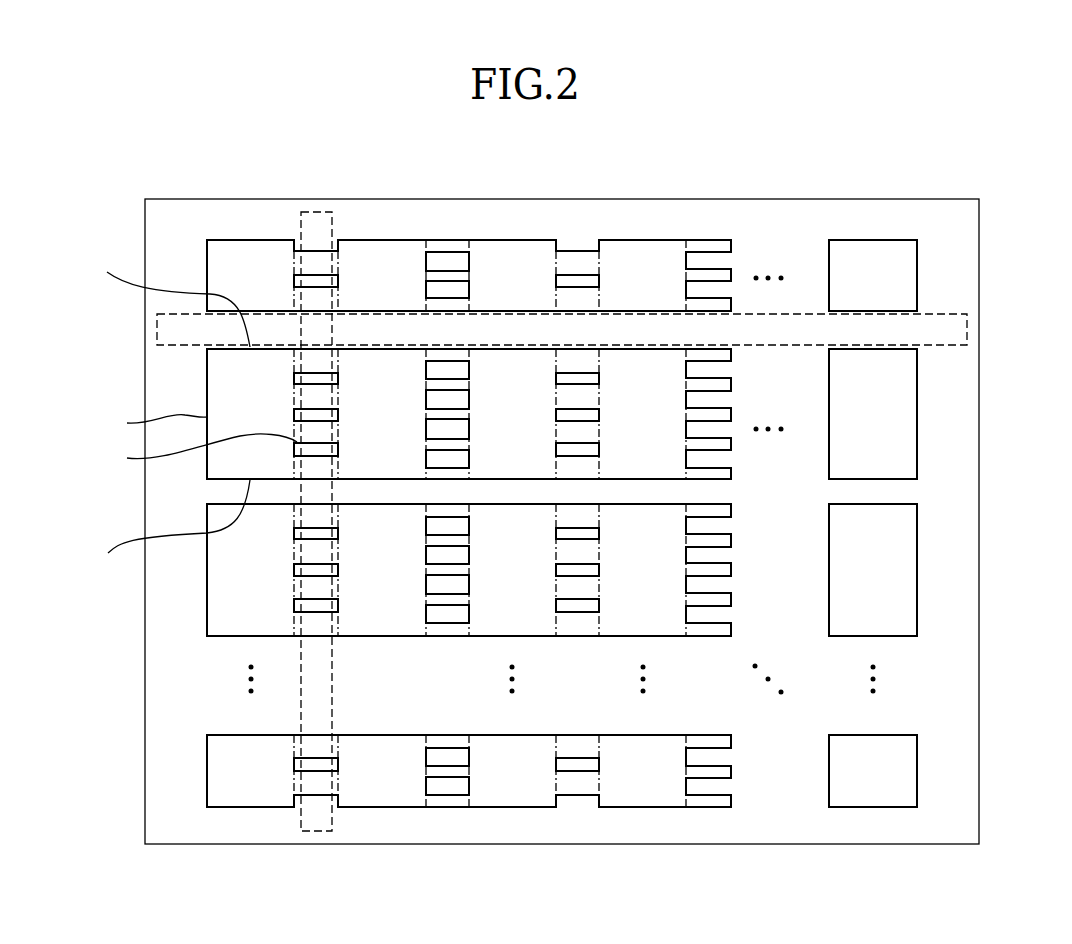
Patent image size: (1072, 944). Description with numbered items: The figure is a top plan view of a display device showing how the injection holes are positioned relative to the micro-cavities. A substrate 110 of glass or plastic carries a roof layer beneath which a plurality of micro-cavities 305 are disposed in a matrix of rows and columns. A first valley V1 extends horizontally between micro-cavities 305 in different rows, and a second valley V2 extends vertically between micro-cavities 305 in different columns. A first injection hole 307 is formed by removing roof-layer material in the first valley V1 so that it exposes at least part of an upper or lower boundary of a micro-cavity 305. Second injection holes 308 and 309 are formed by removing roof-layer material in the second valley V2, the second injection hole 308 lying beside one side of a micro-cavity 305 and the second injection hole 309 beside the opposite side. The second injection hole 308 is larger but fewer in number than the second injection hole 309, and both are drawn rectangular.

The substrate 110 is at (614, 199).
The micro-cavity 305 is at (227, 378).
The first injection hole 307 is at (888, 347).
The second injection hole 308 is at (297, 263).
The second injection hole 309 is at (446, 240).
The first valley V1 is at (157, 327).
The second valley V2 is at (317, 207).